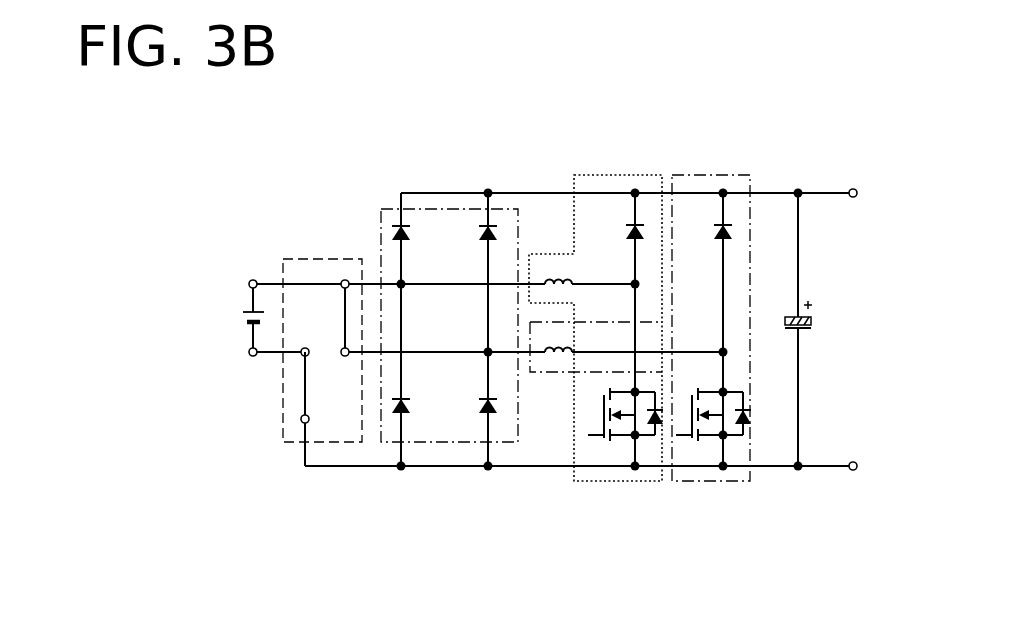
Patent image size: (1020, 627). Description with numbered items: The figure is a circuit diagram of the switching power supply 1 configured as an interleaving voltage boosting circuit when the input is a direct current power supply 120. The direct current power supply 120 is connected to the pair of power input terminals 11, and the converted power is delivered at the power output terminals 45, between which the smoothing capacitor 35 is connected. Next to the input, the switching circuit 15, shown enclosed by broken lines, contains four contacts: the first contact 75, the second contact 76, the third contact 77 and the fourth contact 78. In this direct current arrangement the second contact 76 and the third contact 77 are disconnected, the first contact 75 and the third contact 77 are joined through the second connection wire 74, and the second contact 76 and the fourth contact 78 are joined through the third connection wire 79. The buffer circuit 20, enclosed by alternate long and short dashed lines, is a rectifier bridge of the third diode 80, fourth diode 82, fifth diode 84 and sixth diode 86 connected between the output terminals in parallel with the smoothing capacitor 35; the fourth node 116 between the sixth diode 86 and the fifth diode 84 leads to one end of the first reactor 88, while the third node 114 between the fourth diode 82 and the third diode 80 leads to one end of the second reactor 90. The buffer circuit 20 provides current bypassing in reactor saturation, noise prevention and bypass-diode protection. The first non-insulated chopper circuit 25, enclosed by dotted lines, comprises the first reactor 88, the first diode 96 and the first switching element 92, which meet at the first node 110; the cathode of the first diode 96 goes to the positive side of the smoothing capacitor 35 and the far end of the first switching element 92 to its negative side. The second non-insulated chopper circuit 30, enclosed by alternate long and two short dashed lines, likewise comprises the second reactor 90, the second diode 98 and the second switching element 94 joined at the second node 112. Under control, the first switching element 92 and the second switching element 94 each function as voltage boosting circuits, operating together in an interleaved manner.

The switching power supply 1 is at (622, 119).
The direct current power supply 120 is at (230, 306).
The power input terminals 11 is at (250, 280).
The switching circuit 15 is at (283, 425).
The buffer circuit 20 is at (386, 205).
The first non-insulated chopper circuit 25 is at (618, 483).
The second non-insulated chopper circuit 30 is at (712, 483).
The smoothing capacitor 35 is at (812, 339).
The power output terminals 45 is at (853, 188).
The second connection wire 74 is at (345, 305).
The first contact 75 is at (345, 280).
The second contact 76 is at (304, 356).
The third contact 77 is at (345, 356).
The fourth contact 78 is at (305, 423).
The third connection wire 79 is at (304, 390).
The third diode 80 is at (499, 432).
The fourth diode 82 is at (509, 226).
The fifth diode 84 is at (414, 432).
The sixth diode 86 is at (421, 226).
The first reactor 88 is at (568, 267).
The second reactor 90 is at (568, 332).
The first switching element 92 is at (593, 452).
The second switching element 94 is at (678, 452).
The first diode 96 is at (656, 228).
The second diode 98 is at (744, 228).
The first node 110 is at (637, 285).
The second node 112 is at (724, 351).
The third node 114 is at (490, 353).
The fourth node 116 is at (403, 288).